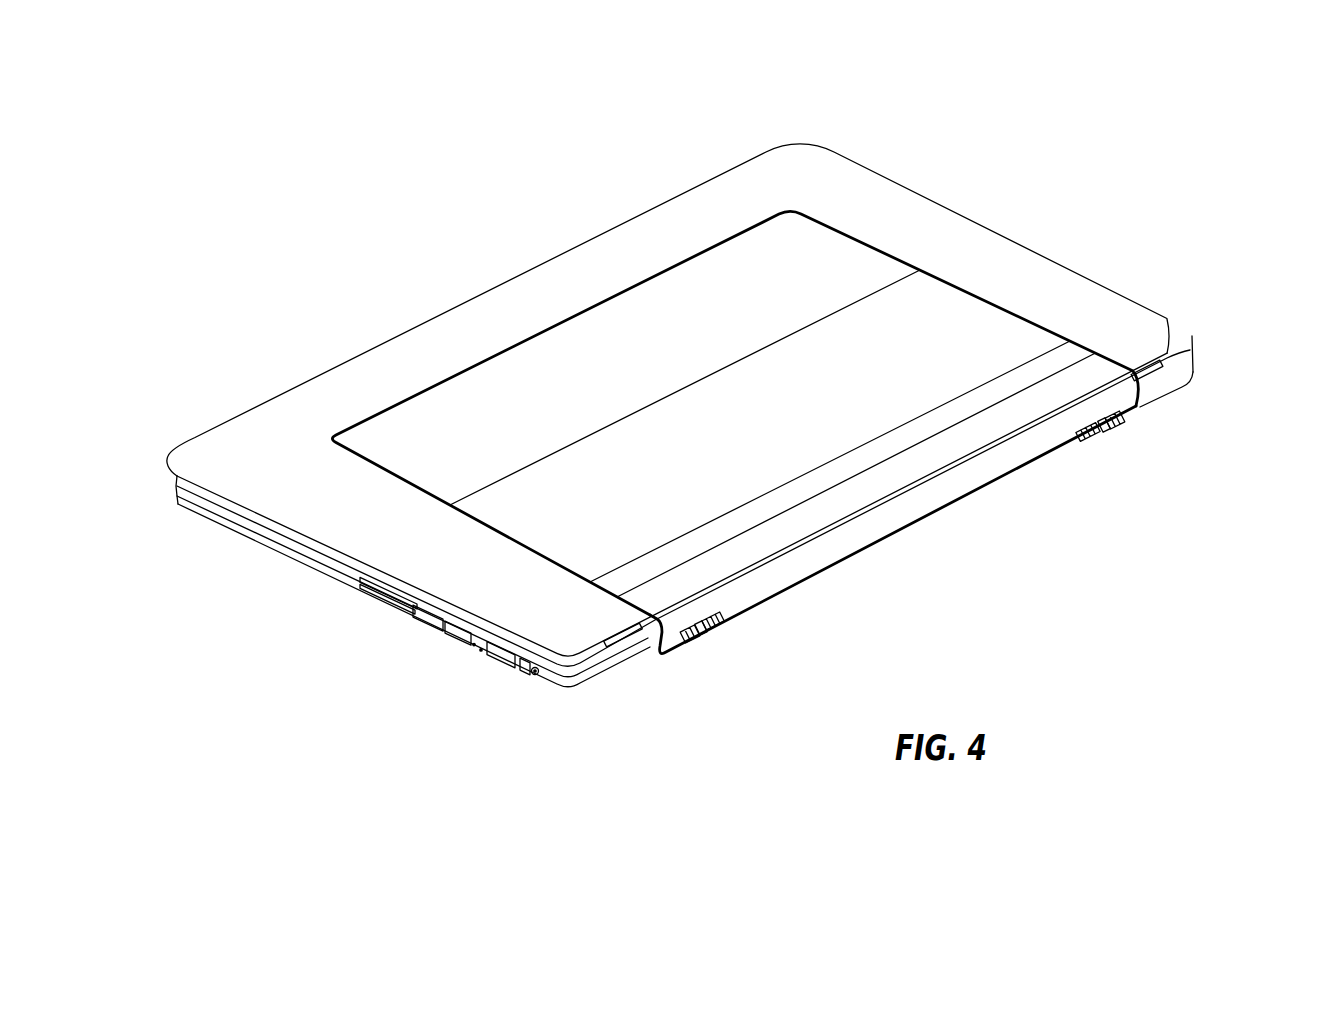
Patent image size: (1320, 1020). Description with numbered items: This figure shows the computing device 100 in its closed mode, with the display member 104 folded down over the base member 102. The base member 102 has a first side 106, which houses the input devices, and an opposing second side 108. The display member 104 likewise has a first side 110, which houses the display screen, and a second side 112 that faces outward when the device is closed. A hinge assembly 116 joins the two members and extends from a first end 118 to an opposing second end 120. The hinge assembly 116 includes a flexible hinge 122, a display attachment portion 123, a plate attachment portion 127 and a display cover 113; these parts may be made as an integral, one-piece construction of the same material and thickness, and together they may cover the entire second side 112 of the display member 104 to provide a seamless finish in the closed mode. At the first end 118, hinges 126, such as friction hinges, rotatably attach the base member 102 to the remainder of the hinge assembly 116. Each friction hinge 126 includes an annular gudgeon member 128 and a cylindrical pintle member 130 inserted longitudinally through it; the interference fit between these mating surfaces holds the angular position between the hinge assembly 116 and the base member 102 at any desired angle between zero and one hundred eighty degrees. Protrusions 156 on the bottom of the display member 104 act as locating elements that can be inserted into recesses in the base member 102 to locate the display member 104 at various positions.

The computing device 100 is at (287, 140).
The base member 102 is at (249, 527).
The display member 104 is at (198, 436).
The first side 106 is at (1197, 362).
The second side 108 is at (214, 508).
The first side 110 is at (1193, 344).
The second side 112 is at (827, 160).
The display cover 113 is at (973, 256).
The hinge assembly 116 is at (1030, 317).
The first end 118 is at (901, 532).
The second end 120 is at (583, 311).
The flexible hinge 122 is at (635, 461).
The display attachment portion 123 is at (663, 349).
The hinges 126 is at (1122, 426).
The plate attachment portion 127 is at (856, 439).
The annular gudgeon member 128 is at (1093, 443).
The cylindrical pintle member 130 is at (1118, 432).
The protrusions 156 is at (1165, 384).